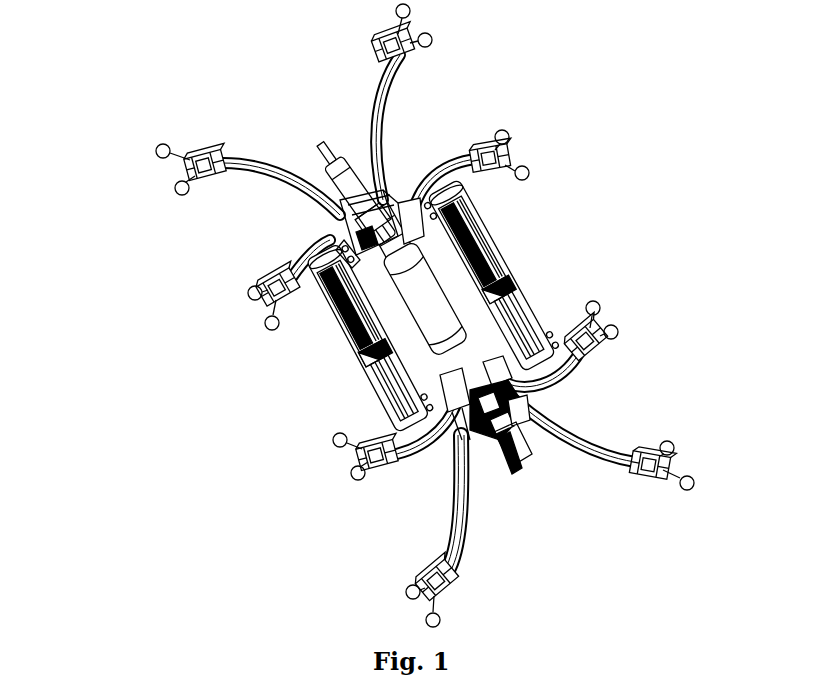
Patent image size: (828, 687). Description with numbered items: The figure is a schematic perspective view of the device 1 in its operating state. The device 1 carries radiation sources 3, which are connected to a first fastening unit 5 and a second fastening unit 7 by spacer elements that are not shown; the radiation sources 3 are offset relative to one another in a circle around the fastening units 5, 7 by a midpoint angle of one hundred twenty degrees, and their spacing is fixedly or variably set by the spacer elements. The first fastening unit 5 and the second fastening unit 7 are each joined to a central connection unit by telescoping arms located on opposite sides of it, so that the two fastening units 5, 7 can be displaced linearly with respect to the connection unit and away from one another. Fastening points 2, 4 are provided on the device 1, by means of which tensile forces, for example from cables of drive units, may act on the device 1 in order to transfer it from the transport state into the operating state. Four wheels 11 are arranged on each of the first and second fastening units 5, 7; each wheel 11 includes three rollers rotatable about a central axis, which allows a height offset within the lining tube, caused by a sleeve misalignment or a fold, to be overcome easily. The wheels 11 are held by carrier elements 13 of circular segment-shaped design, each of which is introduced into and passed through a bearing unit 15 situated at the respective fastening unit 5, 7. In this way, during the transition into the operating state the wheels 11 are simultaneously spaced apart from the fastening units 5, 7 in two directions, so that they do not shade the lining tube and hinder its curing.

The device 1 is at (343, 122).
The fastening point 2 is at (330, 158).
The radiation source 3 is at (490, 237).
The fastening point 4 is at (518, 470).
The first fastening unit 5 is at (420, 240).
The second fastening unit 7 is at (462, 352).
The wheel 11 is at (440, 36).
The carrier element 13 is at (398, 101).
The bearing unit 15 is at (485, 410).